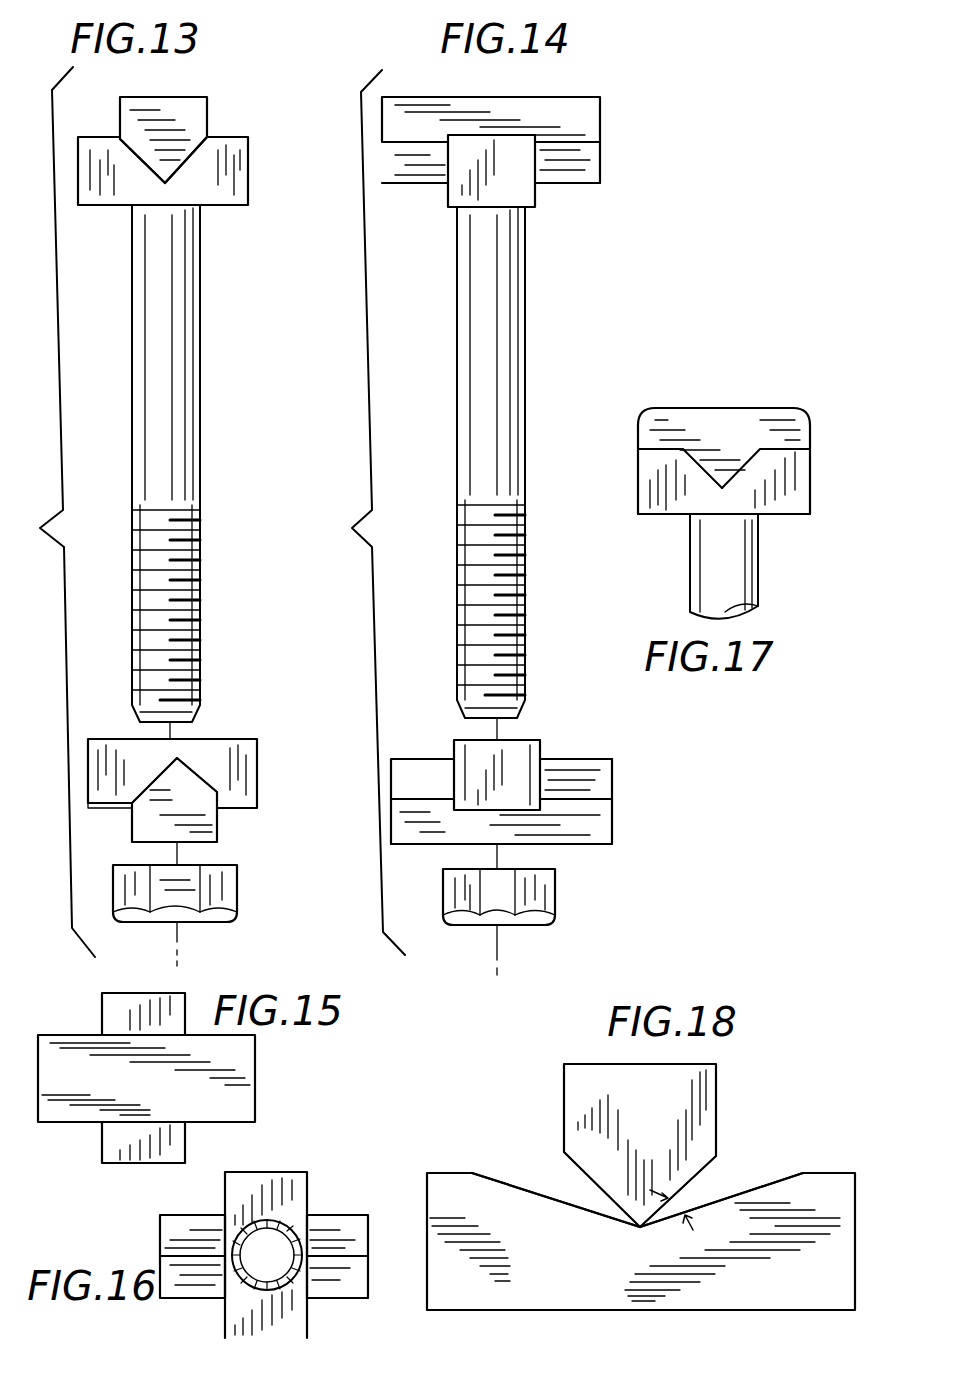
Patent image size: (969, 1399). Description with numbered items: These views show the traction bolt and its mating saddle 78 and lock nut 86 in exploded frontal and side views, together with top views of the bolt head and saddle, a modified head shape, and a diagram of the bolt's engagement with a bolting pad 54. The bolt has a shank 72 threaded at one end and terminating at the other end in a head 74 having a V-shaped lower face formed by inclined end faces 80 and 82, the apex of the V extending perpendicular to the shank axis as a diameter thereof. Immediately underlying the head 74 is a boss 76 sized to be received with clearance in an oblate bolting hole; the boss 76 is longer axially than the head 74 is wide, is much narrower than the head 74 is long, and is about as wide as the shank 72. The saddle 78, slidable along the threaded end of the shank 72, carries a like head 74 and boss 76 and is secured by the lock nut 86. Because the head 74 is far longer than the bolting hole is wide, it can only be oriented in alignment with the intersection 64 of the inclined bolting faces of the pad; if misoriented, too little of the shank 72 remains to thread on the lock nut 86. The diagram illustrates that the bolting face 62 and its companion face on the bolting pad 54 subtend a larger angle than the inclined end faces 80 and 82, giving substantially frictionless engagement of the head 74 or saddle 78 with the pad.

In FIG. 18, the bolting pad 54 is at (795, 1290).
In FIG. 18, the bolting face 62 is at (750, 1190).
In FIG. 18, the intersection of the inclined bolting faces 64 is at (512, 1183).
In FIG. 13, the shank 72 is at (183, 383).
In FIG. 14, the shank 72 is at (487, 380).
In FIG. 17, the shank 72 is at (740, 565).
In FIG. 16, the shank 72 is at (253, 1256).
In FIG. 13, the head 74 is at (175, 130).
In FIG. 14, the head 74 is at (583, 115).
In FIG. 17, the head 74 is at (737, 440).
In FIG. 15, the head 74 is at (90, 1065).
In FIG. 18, the head 74 is at (703, 1090).
In FIG. 13, the boss 76 is at (232, 178).
In FIG. 14, the boss 76 is at (522, 183).
In FIG. 17, the boss 76 is at (658, 515).
In FIG. 15, the boss 76 is at (133, 1008).
In FIG. 16, the boss 76 is at (232, 1190).
In FIG. 13, the saddle 78 is at (86, 803).
In FIG. 14, the saddle 78 is at (405, 848).
In FIG. 13, the inclined end face 80 is at (147, 150).
In FIG. 14, the inclined end face 80 is at (602, 783).
In FIG. 17, the inclined end face 80 is at (700, 463).
In FIG. 16, the inclined end face 80 is at (338, 1225).
In FIG. 18, the inclined end face 80 is at (582, 1182).
In FIG. 13, the inclined end face 82 is at (194, 147).
In FIG. 14, the inclined end face 82 is at (590, 158).
In FIG. 17, the inclined end face 82 is at (760, 470).
In FIG. 16, the inclined end face 82 is at (352, 1285).
In FIG. 18, the inclined end face 82 is at (697, 1173).
In FIG. 13, the lock nut 86 is at (218, 900).
In FIG. 14, the lock nut 86 is at (517, 900).